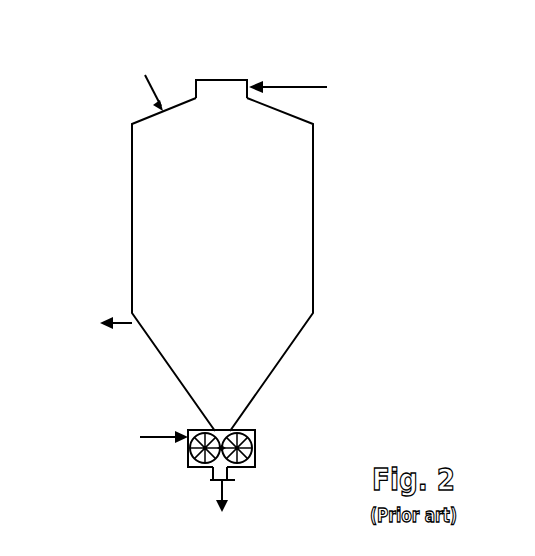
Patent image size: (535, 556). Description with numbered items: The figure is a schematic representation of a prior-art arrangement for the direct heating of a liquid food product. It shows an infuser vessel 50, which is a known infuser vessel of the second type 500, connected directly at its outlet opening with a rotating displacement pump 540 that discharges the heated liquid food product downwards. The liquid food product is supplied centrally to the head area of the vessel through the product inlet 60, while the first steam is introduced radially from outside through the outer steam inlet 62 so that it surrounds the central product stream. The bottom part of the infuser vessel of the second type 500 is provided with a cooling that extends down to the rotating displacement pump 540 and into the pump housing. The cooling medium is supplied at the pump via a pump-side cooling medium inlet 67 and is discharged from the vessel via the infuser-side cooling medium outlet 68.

The infuser vessel 50 is at (185, 236).
The infuser vessel of the second type 500 is at (185, 236).
The product inlet 60 is at (307, 87).
The outer steam inlet 62 is at (150, 90).
The pump-side cooling medium inlet 67 is at (167, 438).
The infuser-side cooling medium outlet 68 is at (122, 323).
The rotating displacement pump 540 is at (253, 433).